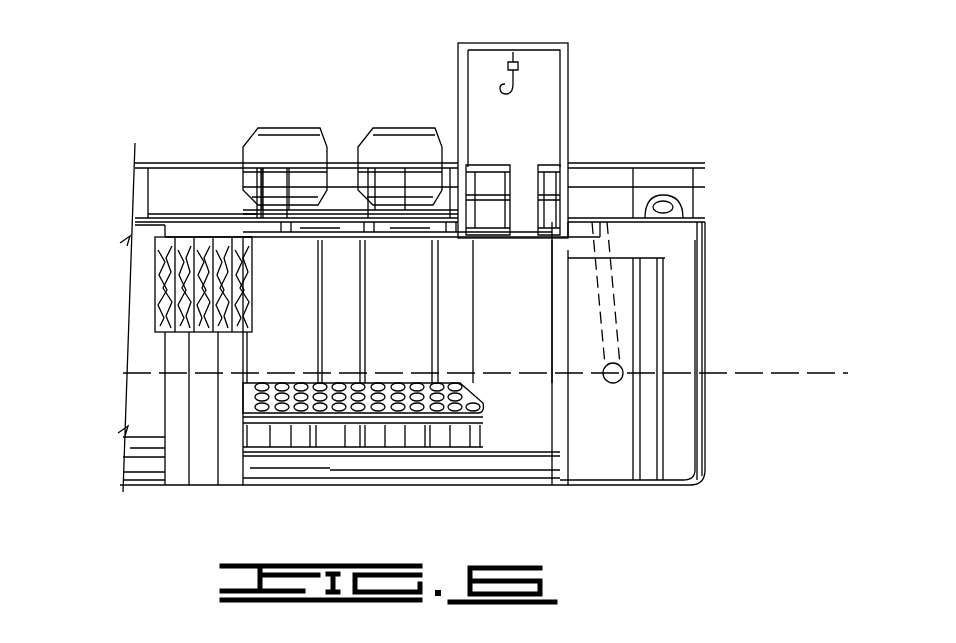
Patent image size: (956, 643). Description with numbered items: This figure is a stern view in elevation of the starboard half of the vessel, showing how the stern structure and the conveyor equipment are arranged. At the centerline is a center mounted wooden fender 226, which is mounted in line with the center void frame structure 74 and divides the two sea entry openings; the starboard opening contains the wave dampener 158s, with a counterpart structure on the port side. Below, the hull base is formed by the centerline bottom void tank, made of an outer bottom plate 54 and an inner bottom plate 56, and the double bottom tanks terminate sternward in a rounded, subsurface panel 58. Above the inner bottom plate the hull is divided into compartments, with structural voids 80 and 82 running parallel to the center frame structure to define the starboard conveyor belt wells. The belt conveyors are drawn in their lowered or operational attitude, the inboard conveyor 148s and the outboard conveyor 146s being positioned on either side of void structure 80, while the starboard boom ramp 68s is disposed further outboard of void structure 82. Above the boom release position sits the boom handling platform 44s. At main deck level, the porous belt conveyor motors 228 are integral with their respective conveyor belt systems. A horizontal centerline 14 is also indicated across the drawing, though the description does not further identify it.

The centerline / pivot axis 14 is at (758, 375).
The boom handling platform 44s is at (521, 215).
The outer bottom plate 54 is at (443, 471).
The inner bottom plate 56 is at (512, 452).
The rounded subsurface panel 58 is at (405, 467).
The starboard boom ramp 68s is at (530, 313).
The frame structure 74 is at (200, 475).
The structural void 80 is at (350, 324).
The structural void 82 is at (464, 324).
The outboard conveyor 146s is at (418, 313).
The inboard conveyor 148s is at (308, 313).
The wave dampener 158s is at (330, 400).
The wooden fender 226 is at (197, 277).
The porous belt conveyor motors 228 is at (283, 140).